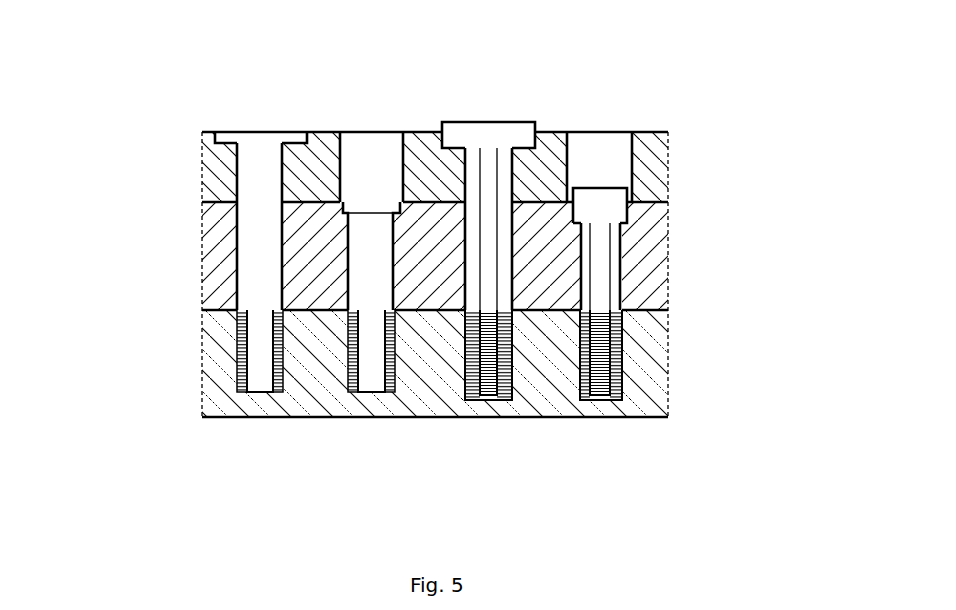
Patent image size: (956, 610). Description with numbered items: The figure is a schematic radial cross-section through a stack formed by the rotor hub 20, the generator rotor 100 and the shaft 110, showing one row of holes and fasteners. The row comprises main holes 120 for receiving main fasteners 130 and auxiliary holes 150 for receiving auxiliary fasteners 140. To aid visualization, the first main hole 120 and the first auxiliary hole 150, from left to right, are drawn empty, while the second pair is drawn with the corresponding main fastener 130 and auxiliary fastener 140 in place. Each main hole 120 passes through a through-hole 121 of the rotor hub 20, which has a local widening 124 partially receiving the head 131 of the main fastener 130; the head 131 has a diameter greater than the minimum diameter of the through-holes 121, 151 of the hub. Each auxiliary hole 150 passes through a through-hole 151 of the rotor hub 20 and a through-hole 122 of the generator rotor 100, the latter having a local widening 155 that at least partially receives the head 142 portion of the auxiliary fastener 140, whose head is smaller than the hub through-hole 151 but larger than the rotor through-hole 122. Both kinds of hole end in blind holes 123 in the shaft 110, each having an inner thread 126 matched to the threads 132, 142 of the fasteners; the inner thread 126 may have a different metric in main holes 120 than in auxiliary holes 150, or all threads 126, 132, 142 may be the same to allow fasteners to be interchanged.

The rotor hub 20 is at (648, 178).
The generator rotor 100 is at (650, 275).
The shaft 110 is at (650, 358).
The main hole 120 is at (196, 259).
The through-hole of the rotor hub 121 is at (255, 170).
The through-hole of the generator rotor 122 is at (255, 263).
The blind hole 123 is at (252, 385).
The local widening 124 is at (205, 137).
The inner thread 126 is at (298, 380).
The main fastener 130 is at (507, 269).
The head of the main fastener 131 is at (516, 122).
The thread of the main fastener 132 is at (490, 400).
The auxiliary fastener 140 is at (603, 195).
The head portion / thread of the auxiliary fastener 142 is at (630, 210).
The auxiliary hole 150 is at (362, 200).
The through-hole of the rotor hub 151 is at (345, 132).
The local widening 155 is at (397, 132).